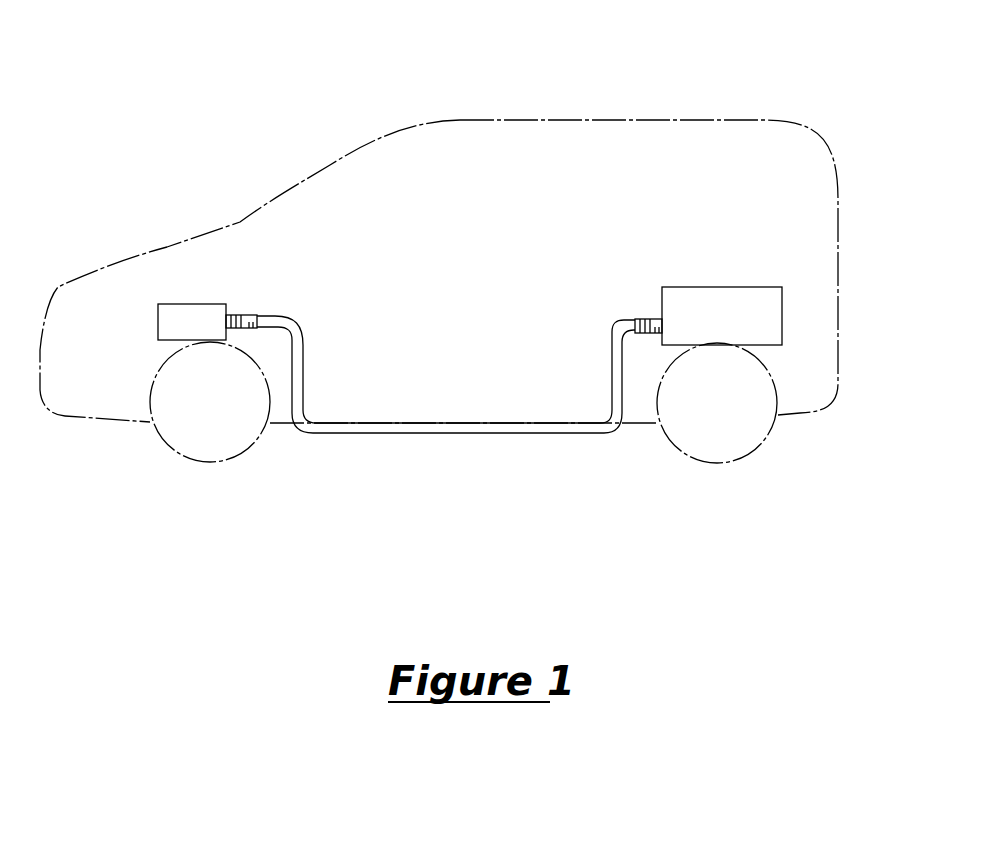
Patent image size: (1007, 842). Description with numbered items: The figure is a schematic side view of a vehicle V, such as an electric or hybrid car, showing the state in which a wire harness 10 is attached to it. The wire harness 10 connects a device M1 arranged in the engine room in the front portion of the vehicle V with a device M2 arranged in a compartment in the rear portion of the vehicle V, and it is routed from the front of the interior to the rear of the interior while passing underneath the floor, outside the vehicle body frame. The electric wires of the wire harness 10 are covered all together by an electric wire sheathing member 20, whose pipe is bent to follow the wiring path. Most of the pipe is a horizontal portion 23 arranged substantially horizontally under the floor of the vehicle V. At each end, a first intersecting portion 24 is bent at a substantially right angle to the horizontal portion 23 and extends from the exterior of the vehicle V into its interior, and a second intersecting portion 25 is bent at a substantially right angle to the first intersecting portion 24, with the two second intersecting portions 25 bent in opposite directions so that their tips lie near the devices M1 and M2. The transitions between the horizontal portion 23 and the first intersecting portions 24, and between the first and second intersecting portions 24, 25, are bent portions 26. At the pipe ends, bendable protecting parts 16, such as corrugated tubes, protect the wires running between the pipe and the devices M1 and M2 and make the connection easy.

The vehicle V is at (529, 172).
The device M1 is at (183, 312).
The device M2 is at (758, 297).
The wire harness 10 is at (446, 422).
The protecting part 16 is at (243, 313).
The electric wire sheathing member 20 is at (446, 422).
The horizontal portion 23 is at (558, 433).
The first intersecting portion 24 is at (296, 377).
The second intersecting portion 25 is at (260, 327).
The bent portion 26 is at (297, 330).